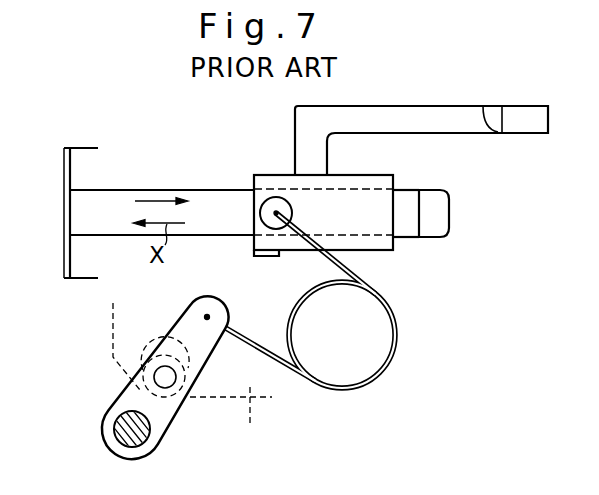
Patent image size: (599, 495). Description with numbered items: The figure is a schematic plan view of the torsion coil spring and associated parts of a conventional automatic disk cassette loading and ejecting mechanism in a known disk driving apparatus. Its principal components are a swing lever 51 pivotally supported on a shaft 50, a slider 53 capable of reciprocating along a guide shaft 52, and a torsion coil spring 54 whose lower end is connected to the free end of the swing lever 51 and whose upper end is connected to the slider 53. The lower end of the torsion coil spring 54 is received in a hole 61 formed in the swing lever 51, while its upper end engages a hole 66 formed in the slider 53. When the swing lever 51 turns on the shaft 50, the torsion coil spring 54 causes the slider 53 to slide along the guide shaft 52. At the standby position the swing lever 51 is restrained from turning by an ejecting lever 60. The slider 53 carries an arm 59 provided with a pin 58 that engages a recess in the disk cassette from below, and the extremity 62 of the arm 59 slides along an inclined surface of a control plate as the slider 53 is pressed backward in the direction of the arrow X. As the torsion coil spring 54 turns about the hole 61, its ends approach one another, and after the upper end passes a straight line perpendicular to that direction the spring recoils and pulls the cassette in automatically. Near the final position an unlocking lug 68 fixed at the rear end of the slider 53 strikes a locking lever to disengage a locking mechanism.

The shaft 50 is at (120, 443).
The swing lever 51 is at (157, 430).
The guide shaft 52 is at (83, 190).
The slider 53 is at (378, 252).
The torsion coil spring 54 is at (378, 373).
The pin 58 is at (492, 130).
The arm 59 is at (419, 117).
The ejecting lever 60 is at (231, 416).
The hole 61 is at (207, 314).
The extremity 62 is at (532, 122).
The hole 66 is at (276, 212).
The unlocking lug 68 is at (280, 258).